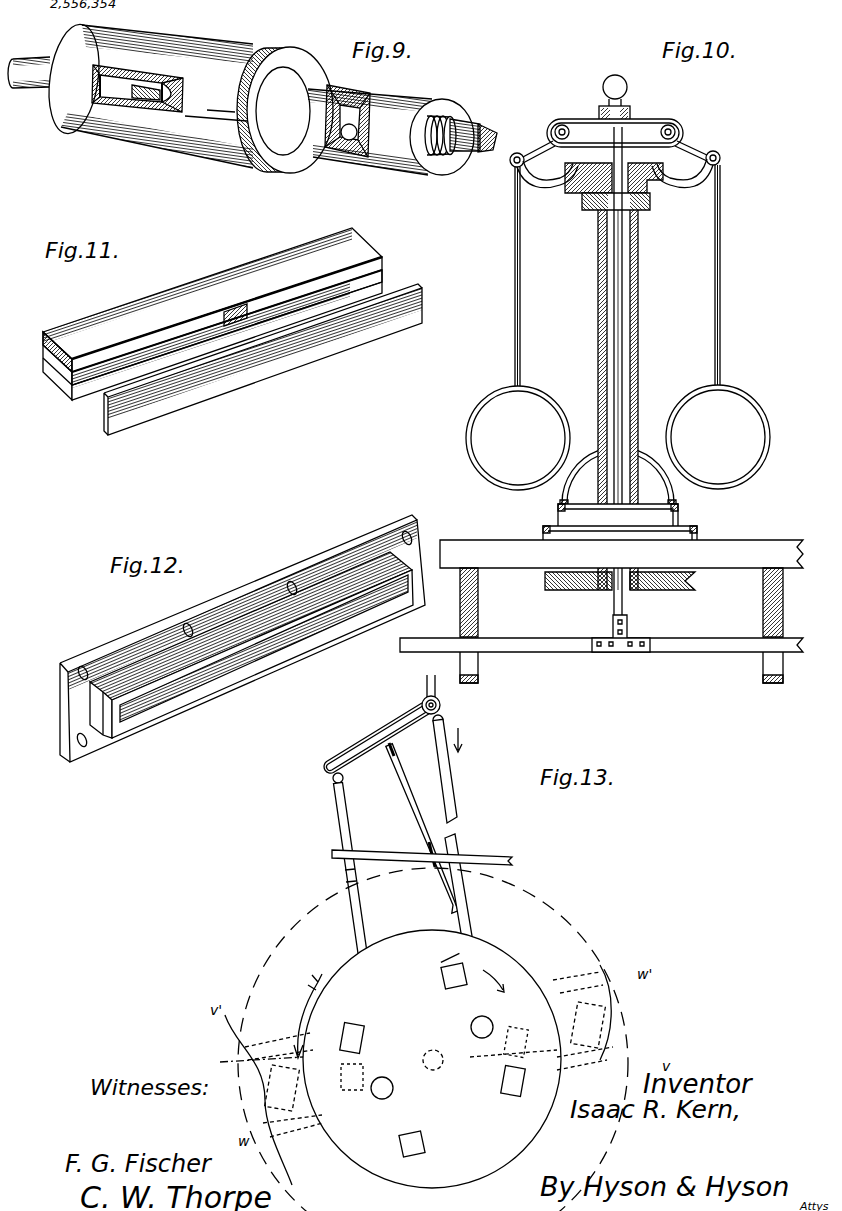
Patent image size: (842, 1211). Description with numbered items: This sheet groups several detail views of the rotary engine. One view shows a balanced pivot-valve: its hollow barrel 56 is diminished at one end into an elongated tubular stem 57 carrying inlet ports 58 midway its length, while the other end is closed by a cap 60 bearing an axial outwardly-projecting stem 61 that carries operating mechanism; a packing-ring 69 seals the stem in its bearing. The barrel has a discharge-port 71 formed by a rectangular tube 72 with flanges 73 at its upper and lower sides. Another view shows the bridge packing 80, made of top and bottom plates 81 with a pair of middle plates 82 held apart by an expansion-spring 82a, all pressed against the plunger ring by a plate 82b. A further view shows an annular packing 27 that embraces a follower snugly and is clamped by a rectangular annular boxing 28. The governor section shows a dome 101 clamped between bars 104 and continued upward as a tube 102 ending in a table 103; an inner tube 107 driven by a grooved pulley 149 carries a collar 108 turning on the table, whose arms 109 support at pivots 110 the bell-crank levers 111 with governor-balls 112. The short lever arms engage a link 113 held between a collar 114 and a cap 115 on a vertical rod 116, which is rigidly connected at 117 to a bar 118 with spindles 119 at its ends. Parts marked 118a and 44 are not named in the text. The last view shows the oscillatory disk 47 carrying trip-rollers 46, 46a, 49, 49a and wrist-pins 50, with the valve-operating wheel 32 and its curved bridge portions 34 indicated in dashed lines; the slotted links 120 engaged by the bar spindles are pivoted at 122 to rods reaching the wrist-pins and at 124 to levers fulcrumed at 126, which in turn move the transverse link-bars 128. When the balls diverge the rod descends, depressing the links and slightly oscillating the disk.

In FIG. 9, the cylindrical portion or barrel 56 is at (188, 43).
In FIG. 9, the tubular stem 57 is at (392, 160).
In FIG. 9, the inlet openings or ports 58 is at (346, 150).
In FIG. 9, the cap 60 is at (94, 32).
In FIG. 9, the outwardly-projecting stem 61 is at (22, 60).
In FIG. 9, the packing-ring 69 is at (445, 156).
In FIG. 9, the discharge-port 71 is at (133, 98).
In FIG. 9, the rectangular tube 72 is at (176, 97).
In FIG. 9, the flanges or lips 73 is at (150, 80).
In FIG. 11, the packing 80 is at (212, 286).
In FIG. 11, the top and bottom plates 81 is at (392, 284).
In FIG. 11, the middle plates 82 is at (381, 258).
In FIG. 11, the expansion-spring 82a is at (236, 326).
In FIG. 11, the plate 82b is at (263, 359).
In FIG. 12, the annular packing 27 is at (273, 662).
In FIG. 12, the annular boxing 28 is at (243, 622).
In FIG. 10, the dome 101 is at (668, 514).
In FIG. 10, the tube 102 is at (597, 284).
In FIG. 10, the table or bearing-plate 103 is at (648, 211).
In FIG. 10, the bars 104 is at (621, 554).
In FIG. 10, the tube 107 is at (624, 368).
In FIG. 10, the collar 108 is at (583, 179).
In FIG. 10, the arms 109 is at (615, 168).
In FIG. 10, the pivot 110 is at (511, 164).
In FIG. 10, the bell-crank levers 111 is at (514, 226).
In FIG. 10, the governor-balls 112 is at (618, 437).
In FIG. 10, the link 113 is at (572, 128).
In FIG. 10, the collar 114 is at (640, 128).
In FIG. 10, the cap 115 is at (627, 86).
In FIG. 10, the vertical rod 116 is at (623, 304).
In FIG. 13, the vertical rod 116 is at (438, 692).
In FIG. 10, the connection 117 is at (621, 652).
In FIG. 10, the bar 118 is at (601, 658).
In FIG. 10, the leg 118a is at (478, 626).
In FIG. 10, the grooved pulley 149 is at (583, 589).
In FIG. 13, the cylindrical spindles 119 is at (422, 705).
In FIG. 13, the slotted links 120 is at (358, 752).
In FIG. 13, the pivotal connection 122 is at (446, 720).
In FIG. 13, the pivotal connection 124 is at (388, 760).
In FIG. 13, the fulcrum 126 is at (432, 862).
In FIG. 13, the link-bars 128 is at (332, 855).
In FIG. 13, the valve-operating wheel 32 is at (433, 1039).
In FIG. 13, the curved bridge portions 34 is at (435, 1054).
In FIG. 13, the hub 44 is at (490, 1059).
In FIG. 13, the trip-roller 46 is at (443, 978).
In FIG. 13, the trip-roller 46a is at (425, 1160).
In FIG. 13, the oscillatory disk 47 is at (380, 1059).
In FIG. 13, the trip-roller 49 is at (350, 1024).
In FIG. 13, the trip-roller 49a is at (513, 1093).
In FIG. 13, the wrist or pivot pins 50 is at (492, 1026).